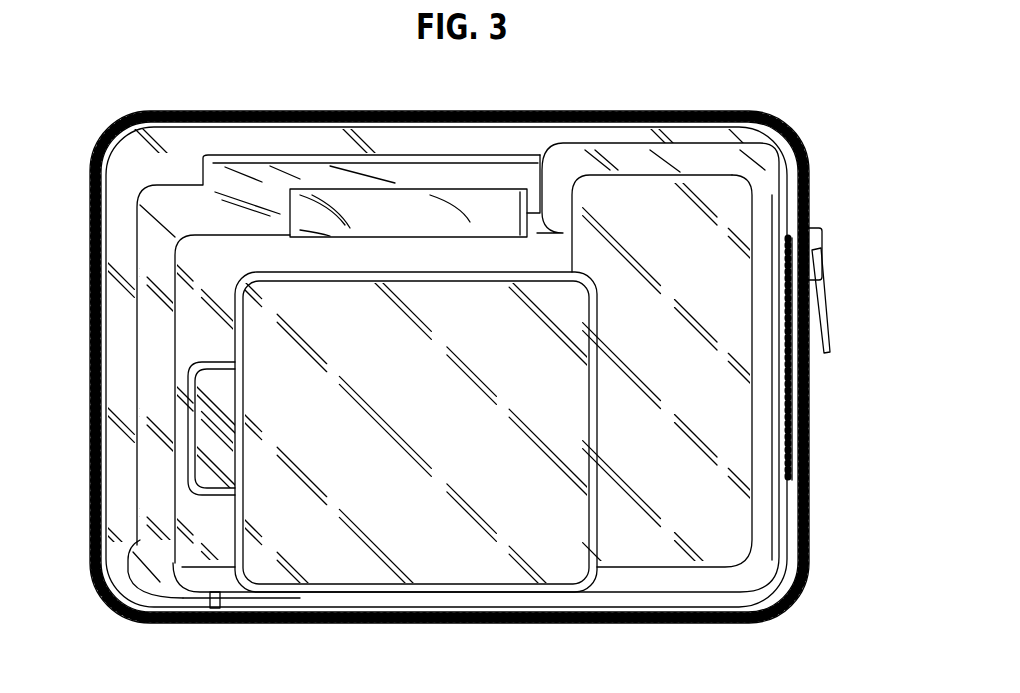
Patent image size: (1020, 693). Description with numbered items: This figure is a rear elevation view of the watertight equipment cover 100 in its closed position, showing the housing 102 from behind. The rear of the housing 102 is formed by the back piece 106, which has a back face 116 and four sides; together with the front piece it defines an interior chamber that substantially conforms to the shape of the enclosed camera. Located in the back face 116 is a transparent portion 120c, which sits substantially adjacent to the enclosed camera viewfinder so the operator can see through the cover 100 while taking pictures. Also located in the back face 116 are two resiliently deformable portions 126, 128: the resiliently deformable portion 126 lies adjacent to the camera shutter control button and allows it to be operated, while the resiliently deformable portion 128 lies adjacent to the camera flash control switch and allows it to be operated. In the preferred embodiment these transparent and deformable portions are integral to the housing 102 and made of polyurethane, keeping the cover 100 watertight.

The watertight equipment cover 100 is at (817, 140).
The housing 102 is at (803, 178).
The back piece 106 is at (803, 560).
The back face 116 is at (428, 413).
The transparent portion 120c is at (457, 197).
The resiliently deformable portion 126 is at (617, 190).
The resiliently deformable portion 128 is at (740, 185).